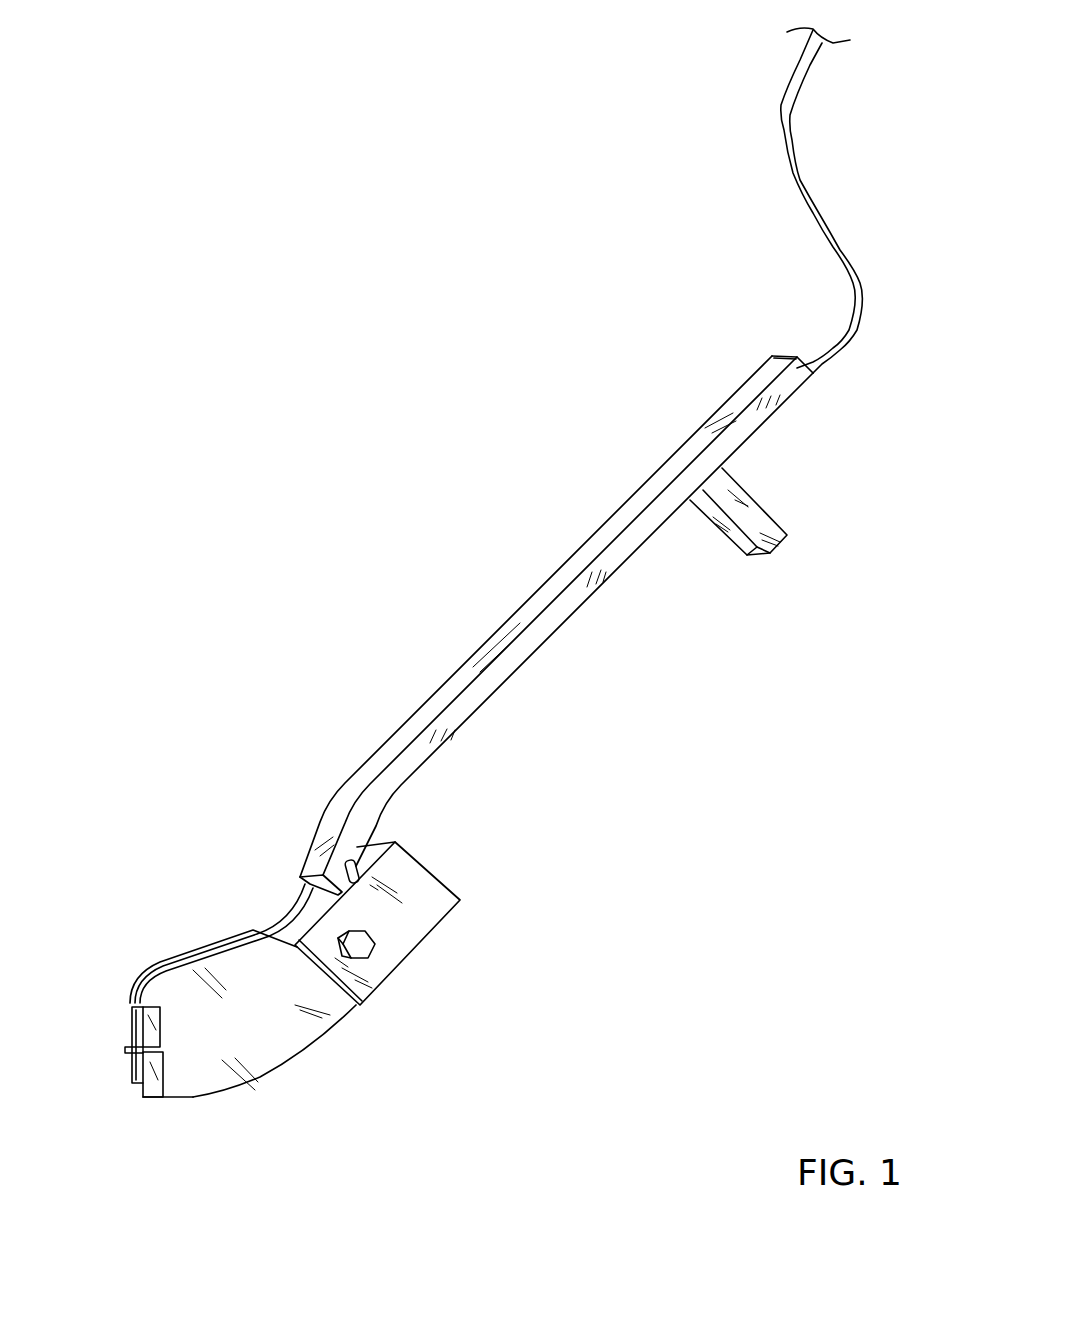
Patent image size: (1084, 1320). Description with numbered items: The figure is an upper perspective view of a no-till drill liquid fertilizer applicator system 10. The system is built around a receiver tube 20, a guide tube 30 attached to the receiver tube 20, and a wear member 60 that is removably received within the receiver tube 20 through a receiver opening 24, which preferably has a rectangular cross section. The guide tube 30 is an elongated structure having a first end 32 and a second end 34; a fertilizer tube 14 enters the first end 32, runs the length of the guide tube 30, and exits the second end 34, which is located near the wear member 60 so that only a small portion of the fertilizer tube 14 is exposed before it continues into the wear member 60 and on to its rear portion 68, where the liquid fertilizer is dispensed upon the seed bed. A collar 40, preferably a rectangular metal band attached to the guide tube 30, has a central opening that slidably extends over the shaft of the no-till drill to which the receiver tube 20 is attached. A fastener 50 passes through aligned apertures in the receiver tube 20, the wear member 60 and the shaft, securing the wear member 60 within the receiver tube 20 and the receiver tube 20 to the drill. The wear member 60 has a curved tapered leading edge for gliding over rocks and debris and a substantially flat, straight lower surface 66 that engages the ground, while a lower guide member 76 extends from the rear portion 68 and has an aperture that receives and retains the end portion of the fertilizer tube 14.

The no-till drill liquid fertilizer applicator system 10 is at (300, 312).
The fertilizer tube 14 is at (782, 128).
The receiver tube 20 is at (420, 880).
The receiver opening 24 is at (338, 987).
The guide tube 30 is at (608, 526).
The first end 32 is at (778, 356).
The second end 34 is at (310, 885).
The collar 40 is at (758, 522).
The fastener 50 is at (362, 944).
The wear member 60 is at (283, 1050).
The lower surface 66 is at (193, 1098).
The rear portion 68 is at (150, 1098).
The lower guide member 76 is at (126, 1049).